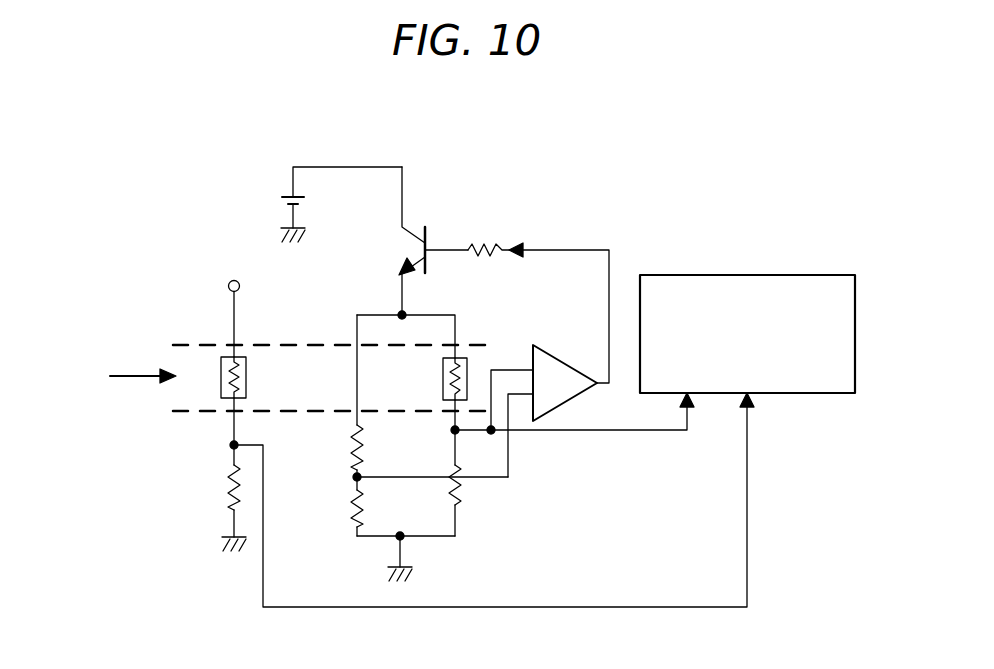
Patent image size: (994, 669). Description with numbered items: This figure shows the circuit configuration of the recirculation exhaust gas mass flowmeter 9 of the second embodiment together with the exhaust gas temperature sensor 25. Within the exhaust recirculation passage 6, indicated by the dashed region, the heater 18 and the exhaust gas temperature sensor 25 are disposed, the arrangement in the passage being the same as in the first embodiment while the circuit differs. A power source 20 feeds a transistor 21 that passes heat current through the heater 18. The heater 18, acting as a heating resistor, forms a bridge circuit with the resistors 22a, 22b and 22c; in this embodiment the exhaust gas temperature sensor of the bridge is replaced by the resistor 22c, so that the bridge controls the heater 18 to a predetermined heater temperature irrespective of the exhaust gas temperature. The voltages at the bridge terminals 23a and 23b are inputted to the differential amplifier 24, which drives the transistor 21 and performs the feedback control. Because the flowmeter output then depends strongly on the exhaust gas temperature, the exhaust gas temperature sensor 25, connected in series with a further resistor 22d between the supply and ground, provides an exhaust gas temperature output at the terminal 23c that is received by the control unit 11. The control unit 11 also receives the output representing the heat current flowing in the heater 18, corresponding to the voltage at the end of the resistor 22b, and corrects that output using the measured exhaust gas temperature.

The recirculation exhaust gas mass flowmeter 9 is at (580, 153).
The exhaust recirculation passage 6 is at (185, 345).
The exhaust gas temperature sensor 25 is at (248, 376).
The heater 18 is at (443, 376).
The power source 20 is at (281, 200).
The transistor 21 is at (426, 237).
The differential amplifier 24 is at (570, 392).
The control unit 11 is at (805, 273).
The resistor 22a is at (347, 500).
The resistor 22b is at (463, 486).
The resistor 22c is at (352, 445).
The resistor 22d is at (229, 490).
The terminal 23a is at (365, 477).
The terminal 23b is at (462, 432).
The terminal 23c is at (229, 446).